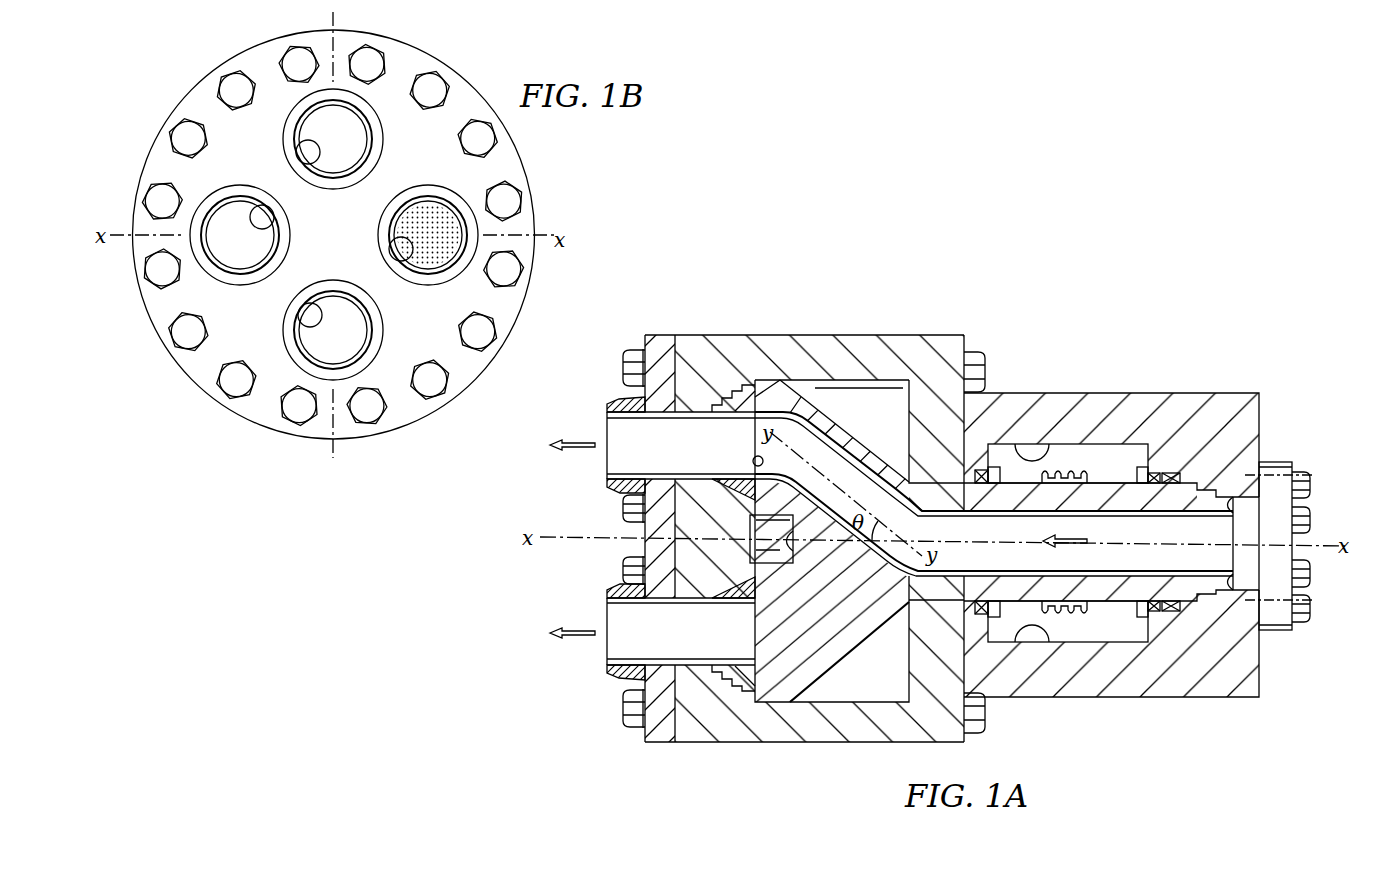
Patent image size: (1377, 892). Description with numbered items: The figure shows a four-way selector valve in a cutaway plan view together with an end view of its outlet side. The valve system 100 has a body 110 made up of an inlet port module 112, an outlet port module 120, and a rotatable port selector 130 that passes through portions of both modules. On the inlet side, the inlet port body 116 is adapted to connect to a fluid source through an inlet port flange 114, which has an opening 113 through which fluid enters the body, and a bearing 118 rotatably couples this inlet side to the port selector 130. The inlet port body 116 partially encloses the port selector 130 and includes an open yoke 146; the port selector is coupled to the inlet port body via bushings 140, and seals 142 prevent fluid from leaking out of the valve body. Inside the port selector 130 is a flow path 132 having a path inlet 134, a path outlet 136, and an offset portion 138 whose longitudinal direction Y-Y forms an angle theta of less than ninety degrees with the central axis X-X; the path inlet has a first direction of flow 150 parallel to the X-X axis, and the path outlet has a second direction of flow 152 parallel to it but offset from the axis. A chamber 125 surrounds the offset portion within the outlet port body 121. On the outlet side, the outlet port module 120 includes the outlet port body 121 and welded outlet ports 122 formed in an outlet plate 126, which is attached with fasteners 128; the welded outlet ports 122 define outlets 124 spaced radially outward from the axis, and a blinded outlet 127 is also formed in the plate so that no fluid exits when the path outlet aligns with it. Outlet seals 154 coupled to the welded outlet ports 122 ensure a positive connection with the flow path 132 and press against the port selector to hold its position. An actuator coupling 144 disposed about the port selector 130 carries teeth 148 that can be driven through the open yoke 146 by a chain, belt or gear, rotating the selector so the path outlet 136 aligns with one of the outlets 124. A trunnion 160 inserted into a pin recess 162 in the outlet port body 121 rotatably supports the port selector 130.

In FIG. 1A, the valve system 100 is at (1096, 221).
In FIG. 1A, the body 110 is at (956, 287).
In FIG. 1A, the inlet port module 112 is at (1203, 387).
In FIG. 1A, the opening 113 is at (1321, 555).
In FIG. 1A, the inlet port flange 114 is at (1273, 462).
In FIG. 1A, the inlet port body 116 is at (1268, 657).
In FIG. 1A, the bearing 118 is at (1233, 556).
In FIG. 1A, the outlet port module 120 is at (710, 304).
In FIG. 1A, the outlet port body 121 is at (858, 336).
In FIG. 1B, the welded outlet ports 122 is at (430, 186).
In FIG. 1A, the welded outlet ports 122 is at (622, 500).
In FIG. 1B, the outlets 124 is at (298, 150).
In FIG. 1A, the outlets 124 is at (607, 462).
In FIG. 1A, the chamber 125 is at (903, 423).
In FIG. 1B, the outlet plate 126 is at (194, 378).
In FIG. 1A, the outlet plate 126 is at (655, 743).
In FIG. 1B, the blinded outlet 127 is at (390, 246).
In FIG. 1B, the fasteners 128 is at (240, 72).
In FIG. 1A, the fasteners 128 is at (622, 365).
In FIG. 1A, the port selector 130 is at (852, 650).
In FIG. 1A, the flow path 132 is at (1008, 556).
In FIG. 1A, the path inlet 134 is at (1232, 500).
In FIG. 1A, the path outlet 136 is at (753, 461).
In FIG. 1A, the offset portion 138 is at (860, 498).
In FIG. 1A, the bushings 140 is at (1143, 612).
In FIG. 1A, the seals 142 is at (1170, 614).
In FIG. 1A, the actuator coupling 144 is at (1080, 476).
In FIG. 1A, the open yoke 146 is at (1034, 452).
In FIG. 1A, the teeth 148 is at (1063, 620).
In FIG. 1A, the first direction of flow 150 is at (1092, 540).
In FIG. 1A, the second direction of flow 152 is at (580, 440).
In FIG. 1A, the outlet seals 154 is at (738, 393).
In FIG. 1A, the trunnion 160 is at (783, 565).
In FIG. 1A, the pin recess 162 is at (793, 541).